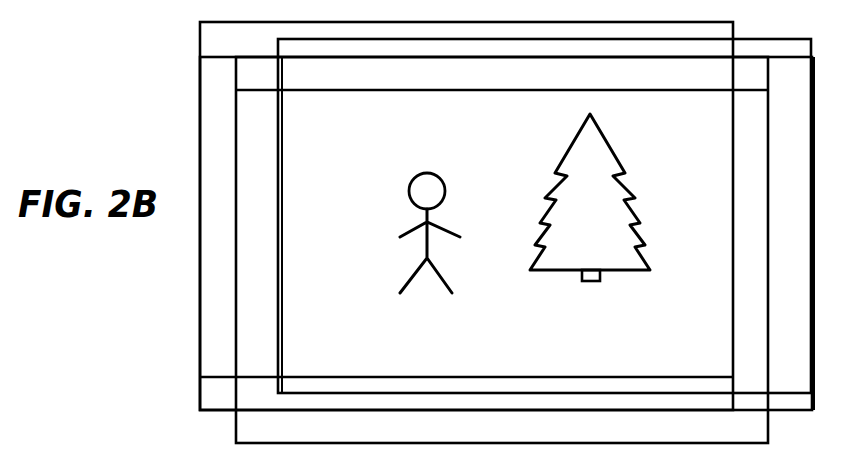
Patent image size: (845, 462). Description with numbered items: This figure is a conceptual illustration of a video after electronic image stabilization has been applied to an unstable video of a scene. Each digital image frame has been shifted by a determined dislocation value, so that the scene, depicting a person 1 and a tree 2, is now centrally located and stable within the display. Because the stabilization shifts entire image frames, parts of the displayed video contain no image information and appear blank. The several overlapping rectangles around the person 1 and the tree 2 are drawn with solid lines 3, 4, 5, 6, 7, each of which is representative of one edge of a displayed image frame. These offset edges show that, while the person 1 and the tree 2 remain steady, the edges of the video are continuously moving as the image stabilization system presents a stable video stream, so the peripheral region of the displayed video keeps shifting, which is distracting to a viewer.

The person 1 is at (423, 190).
The tree 2 is at (605, 166).
The solid line 3 is at (393, 377).
The solid line 4 is at (310, 393).
The solid line 5 is at (485, 412).
The solid line 6 is at (768, 288).
The solid line 7 is at (490, 90).